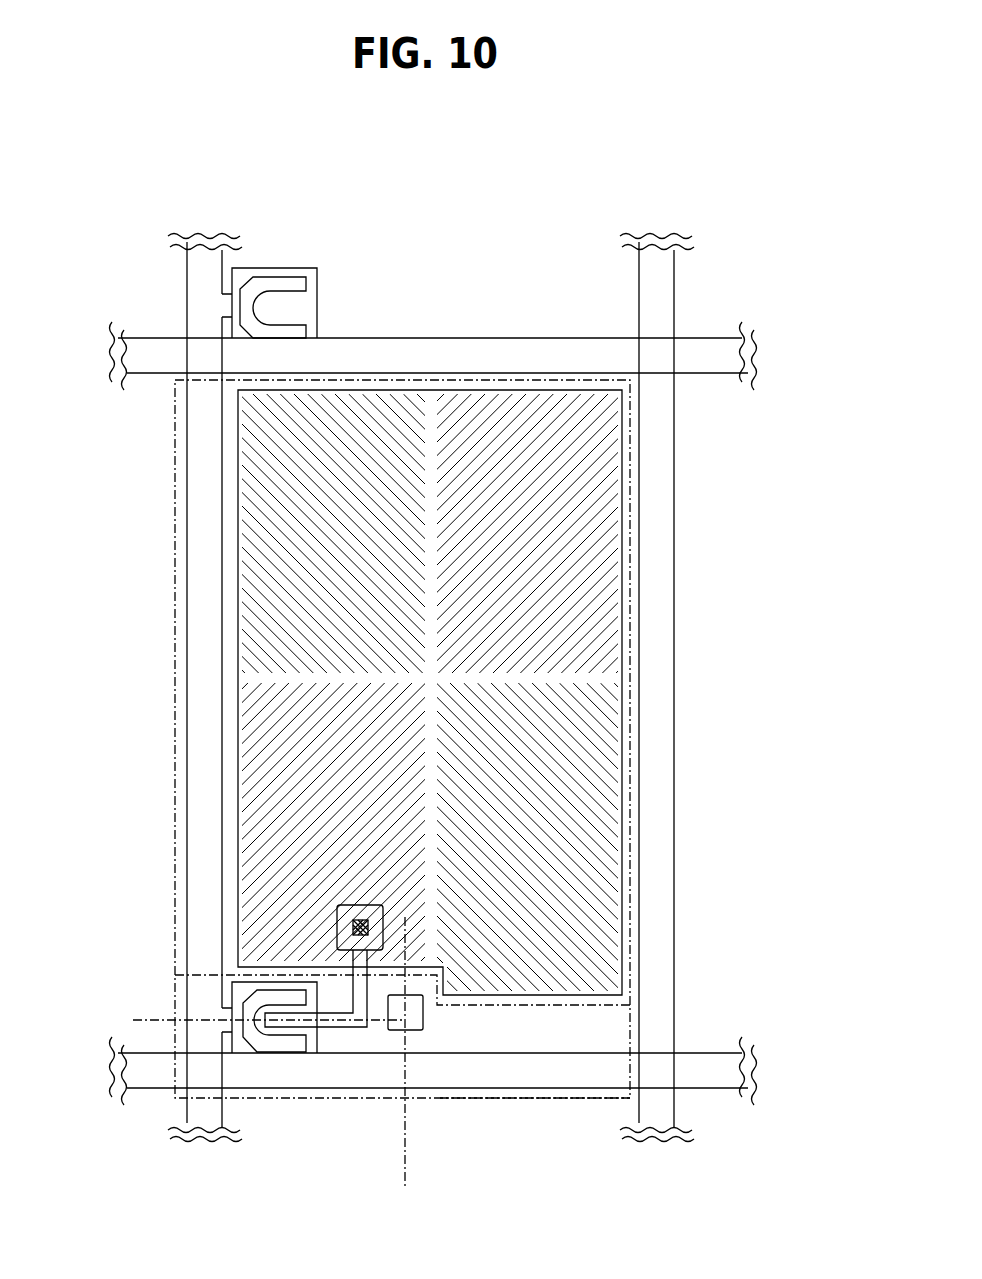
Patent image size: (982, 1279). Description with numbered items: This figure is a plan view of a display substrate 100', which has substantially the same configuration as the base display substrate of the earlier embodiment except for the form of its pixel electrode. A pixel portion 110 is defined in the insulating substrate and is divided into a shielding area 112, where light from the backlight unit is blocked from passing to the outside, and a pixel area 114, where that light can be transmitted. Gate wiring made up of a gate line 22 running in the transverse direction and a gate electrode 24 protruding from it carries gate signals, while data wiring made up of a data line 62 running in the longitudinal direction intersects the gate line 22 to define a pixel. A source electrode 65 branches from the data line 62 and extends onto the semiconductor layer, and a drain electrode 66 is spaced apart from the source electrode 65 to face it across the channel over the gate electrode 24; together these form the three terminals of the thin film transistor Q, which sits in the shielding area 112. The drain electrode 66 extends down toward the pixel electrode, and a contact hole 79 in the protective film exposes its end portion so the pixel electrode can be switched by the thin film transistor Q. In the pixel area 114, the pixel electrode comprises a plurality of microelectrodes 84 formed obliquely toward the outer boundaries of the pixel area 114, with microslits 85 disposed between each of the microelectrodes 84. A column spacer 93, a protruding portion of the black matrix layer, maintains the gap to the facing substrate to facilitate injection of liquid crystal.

The display substrate 100' is at (461, 689).
The gate line 22 is at (242, 1080).
The gate electrode 24 is at (305, 1057).
The data line 62 is at (197, 752).
The source electrode 65 is at (277, 1058).
The drain electrode 66 is at (348, 1053).
The contact hole 79 is at (370, 905).
The microelectrodes 84 is at (237, 507).
The microslits 85 is at (237, 523).
The column spacer 93 is at (410, 1032).
The thin film transistor Q is at (289, 955).
The pixel portion 110 is at (580, 1182).
The shielding area 112 is at (525, 1105).
The pixel area 114 is at (578, 1008).